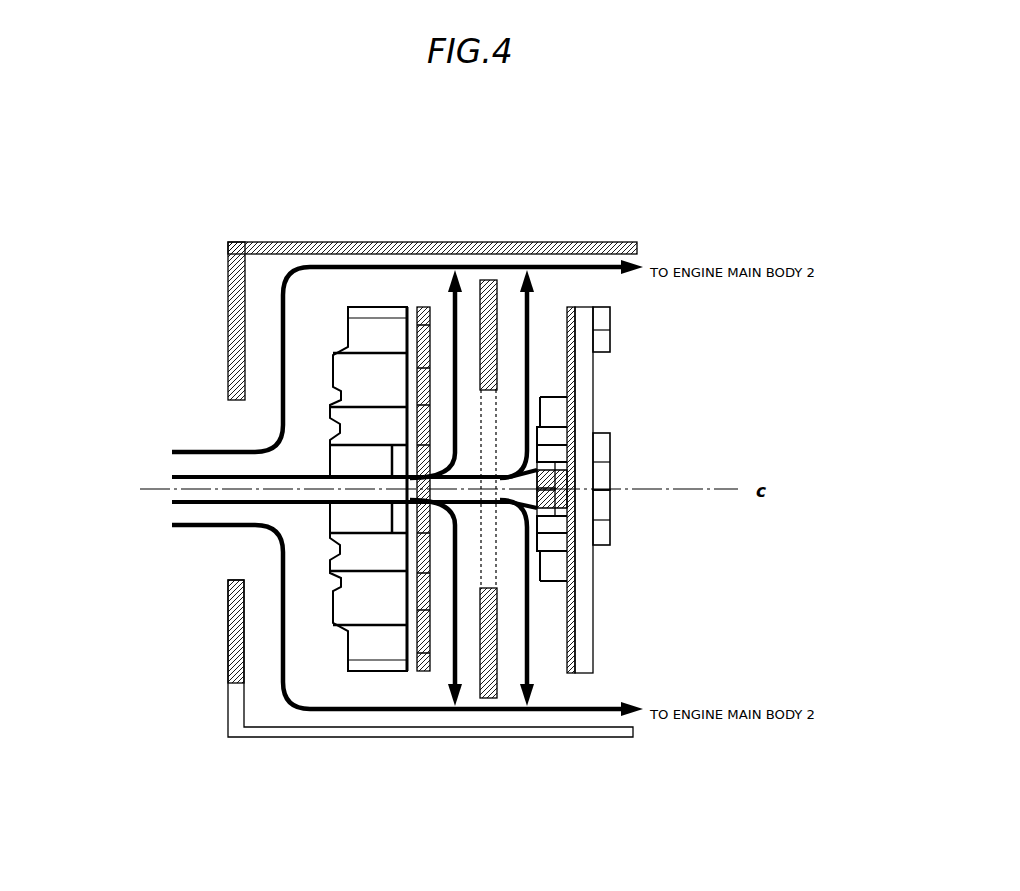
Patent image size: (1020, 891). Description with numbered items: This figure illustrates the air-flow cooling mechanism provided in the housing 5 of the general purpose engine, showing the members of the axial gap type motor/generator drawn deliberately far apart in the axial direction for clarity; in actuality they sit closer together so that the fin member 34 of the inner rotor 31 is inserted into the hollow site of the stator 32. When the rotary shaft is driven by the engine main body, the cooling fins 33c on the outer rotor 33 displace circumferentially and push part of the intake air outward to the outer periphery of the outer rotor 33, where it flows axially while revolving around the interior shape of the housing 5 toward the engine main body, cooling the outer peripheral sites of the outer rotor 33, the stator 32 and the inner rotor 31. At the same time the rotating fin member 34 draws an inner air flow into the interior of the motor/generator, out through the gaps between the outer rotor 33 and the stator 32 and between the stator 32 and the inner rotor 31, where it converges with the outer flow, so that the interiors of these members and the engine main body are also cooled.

The housing 5 is at (276, 242).
The inner rotor 31 is at (587, 305).
The stator 32 is at (487, 282).
The outer rotor 33 is at (378, 312).
The cooling fins 33c is at (378, 640).
The fin member 34 is at (578, 566).